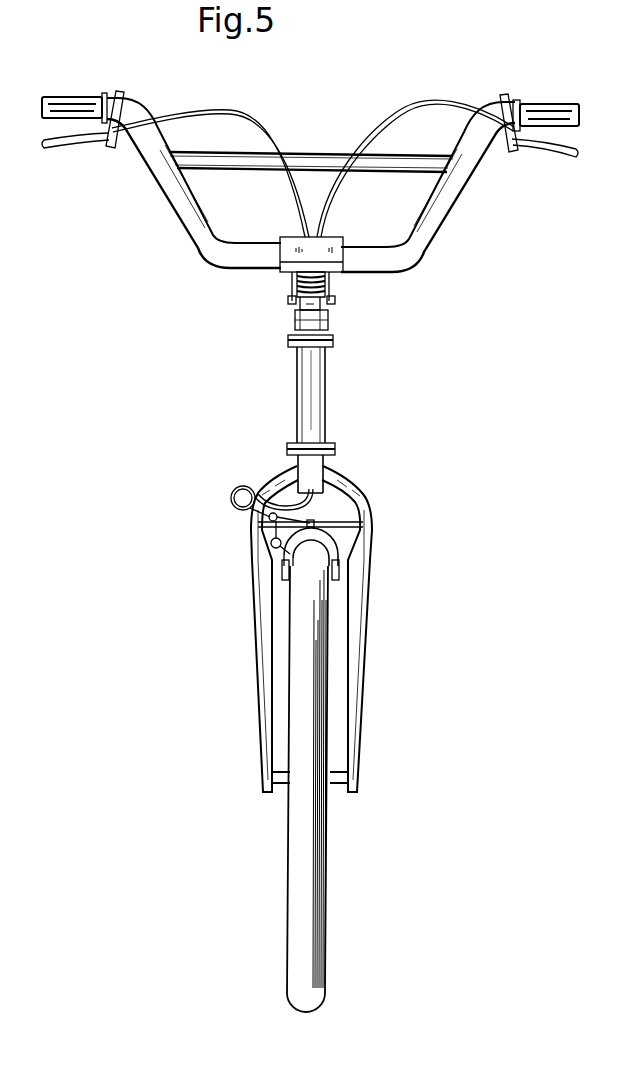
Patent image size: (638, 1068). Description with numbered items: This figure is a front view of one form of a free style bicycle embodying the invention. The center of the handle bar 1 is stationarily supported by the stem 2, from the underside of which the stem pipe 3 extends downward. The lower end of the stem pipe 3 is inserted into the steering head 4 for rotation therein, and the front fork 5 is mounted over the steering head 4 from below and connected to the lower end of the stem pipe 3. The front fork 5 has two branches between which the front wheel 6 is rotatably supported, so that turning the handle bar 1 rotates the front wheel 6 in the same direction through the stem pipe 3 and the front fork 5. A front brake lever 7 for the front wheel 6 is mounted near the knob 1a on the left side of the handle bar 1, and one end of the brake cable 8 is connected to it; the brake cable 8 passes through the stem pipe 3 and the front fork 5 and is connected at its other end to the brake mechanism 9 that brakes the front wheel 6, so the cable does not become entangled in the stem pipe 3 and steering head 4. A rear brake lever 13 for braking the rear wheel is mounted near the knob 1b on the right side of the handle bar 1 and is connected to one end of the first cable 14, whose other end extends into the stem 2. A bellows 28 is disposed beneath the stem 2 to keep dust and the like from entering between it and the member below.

The handle bar 1 is at (424, 247).
The knob 1a is at (560, 104).
The knob 1b is at (56, 88).
The stem 2 is at (284, 264).
The stem pipe 3 is at (336, 299).
The steering head 4 is at (325, 396).
The front fork 5 is at (333, 458).
The front wheel 6 is at (329, 846).
The front brake lever 7 is at (555, 152).
The brake cable 8 is at (445, 102).
The brake mechanism 9 is at (344, 543).
The rear brake lever 13 is at (66, 141).
The first cable 14 is at (243, 110).
The bellows 28 is at (292, 303).